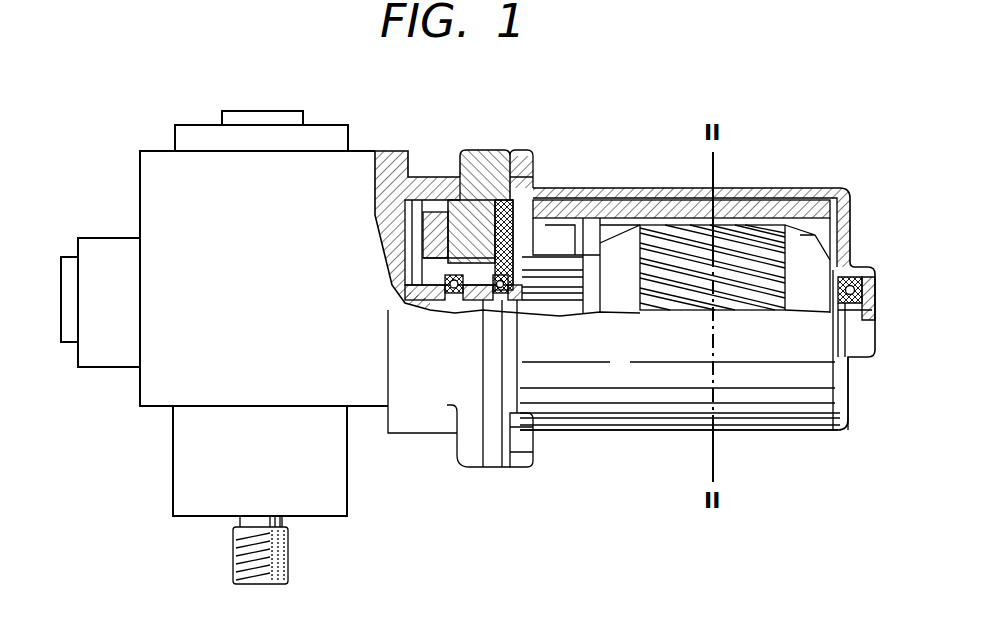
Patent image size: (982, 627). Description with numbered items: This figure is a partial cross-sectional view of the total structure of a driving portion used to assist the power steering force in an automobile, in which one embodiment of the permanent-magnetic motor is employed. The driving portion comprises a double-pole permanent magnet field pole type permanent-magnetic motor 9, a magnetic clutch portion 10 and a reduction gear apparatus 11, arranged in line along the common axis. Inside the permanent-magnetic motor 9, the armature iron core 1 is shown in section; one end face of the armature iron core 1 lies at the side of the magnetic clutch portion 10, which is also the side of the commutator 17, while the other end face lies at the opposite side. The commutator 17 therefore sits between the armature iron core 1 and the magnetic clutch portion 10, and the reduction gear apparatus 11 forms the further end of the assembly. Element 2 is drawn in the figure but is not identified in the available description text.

The armature iron core 1 is at (762, 243).
The housing cap 2 is at (816, 204).
The permanent-magnetic motor 9 is at (813, 427).
The magnetic clutch portion 10 is at (477, 150).
The reduction gear apparatus 11 is at (152, 165).
The commutator 17 is at (578, 240).